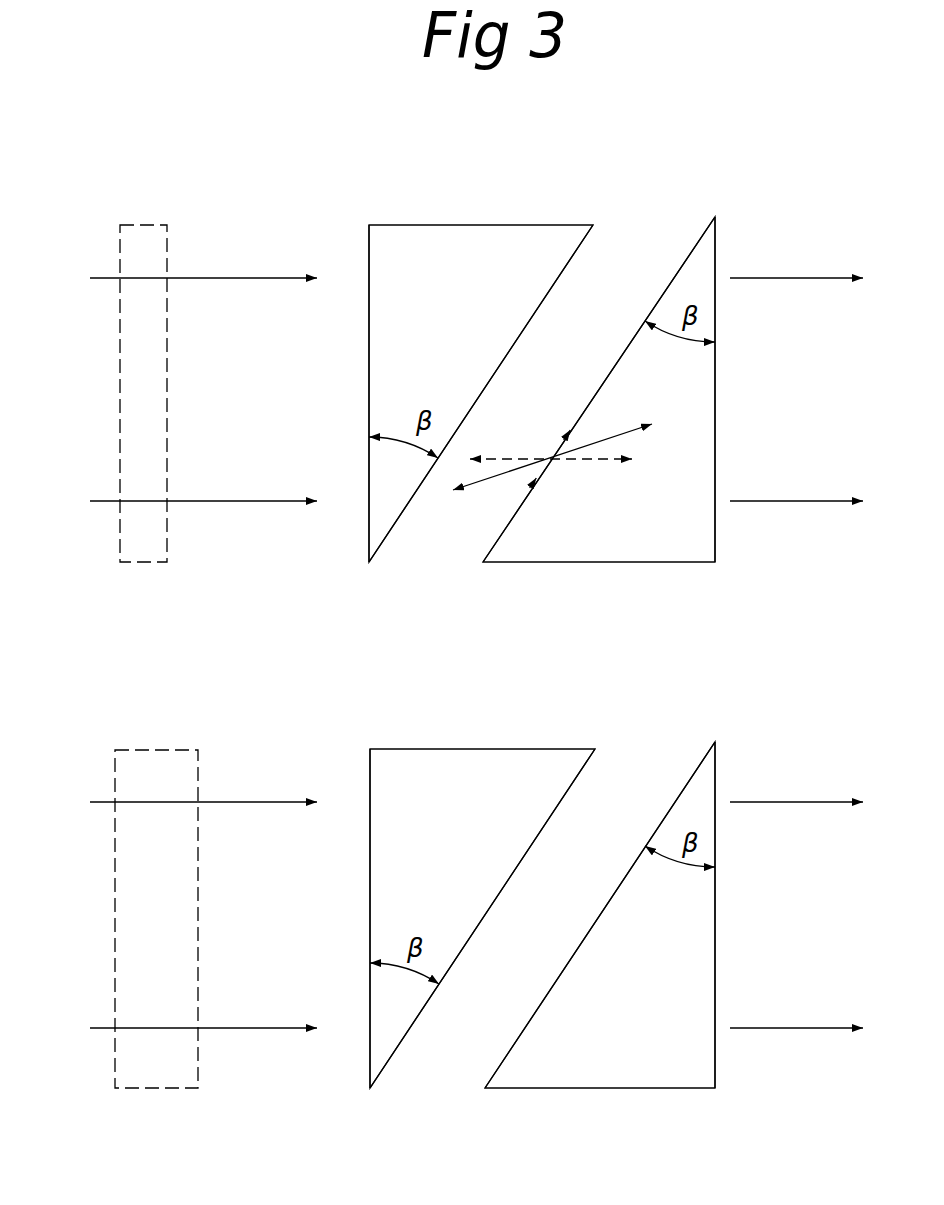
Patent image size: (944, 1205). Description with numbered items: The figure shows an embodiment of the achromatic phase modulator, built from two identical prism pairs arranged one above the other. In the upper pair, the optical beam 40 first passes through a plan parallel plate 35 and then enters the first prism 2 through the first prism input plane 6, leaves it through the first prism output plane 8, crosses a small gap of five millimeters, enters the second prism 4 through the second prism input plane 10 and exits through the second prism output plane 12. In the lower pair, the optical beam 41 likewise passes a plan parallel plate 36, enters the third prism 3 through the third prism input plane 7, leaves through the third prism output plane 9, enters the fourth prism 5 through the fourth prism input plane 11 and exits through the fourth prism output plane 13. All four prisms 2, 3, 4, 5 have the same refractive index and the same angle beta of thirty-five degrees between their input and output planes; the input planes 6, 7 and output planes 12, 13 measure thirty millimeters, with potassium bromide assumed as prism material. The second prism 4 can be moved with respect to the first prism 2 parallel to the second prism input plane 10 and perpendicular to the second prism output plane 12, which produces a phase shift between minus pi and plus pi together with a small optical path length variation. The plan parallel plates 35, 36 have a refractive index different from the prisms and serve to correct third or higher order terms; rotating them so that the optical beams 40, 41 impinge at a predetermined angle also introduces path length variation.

The first prism 2 is at (490, 238).
The third prism 3 is at (483, 782).
The second prism 4 is at (702, 243).
The fourth prism 5 is at (715, 786).
The first prism input plane 6 is at (369, 256).
The third prism input plane 7 is at (370, 780).
The first prism output plane 8 is at (577, 256).
The third prism output plane 9 is at (578, 778).
The second prism input plane 10 is at (685, 258).
The fourth prism input plane 11 is at (678, 790).
The second prism output plane 12 is at (715, 273).
The fourth prism output plane 13 is at (715, 787).
The plan parallel plate 35 is at (125, 243).
The plan parallel plate 36 is at (140, 773).
The optical beam 40 is at (270, 278).
The optical beam 41 is at (240, 802).